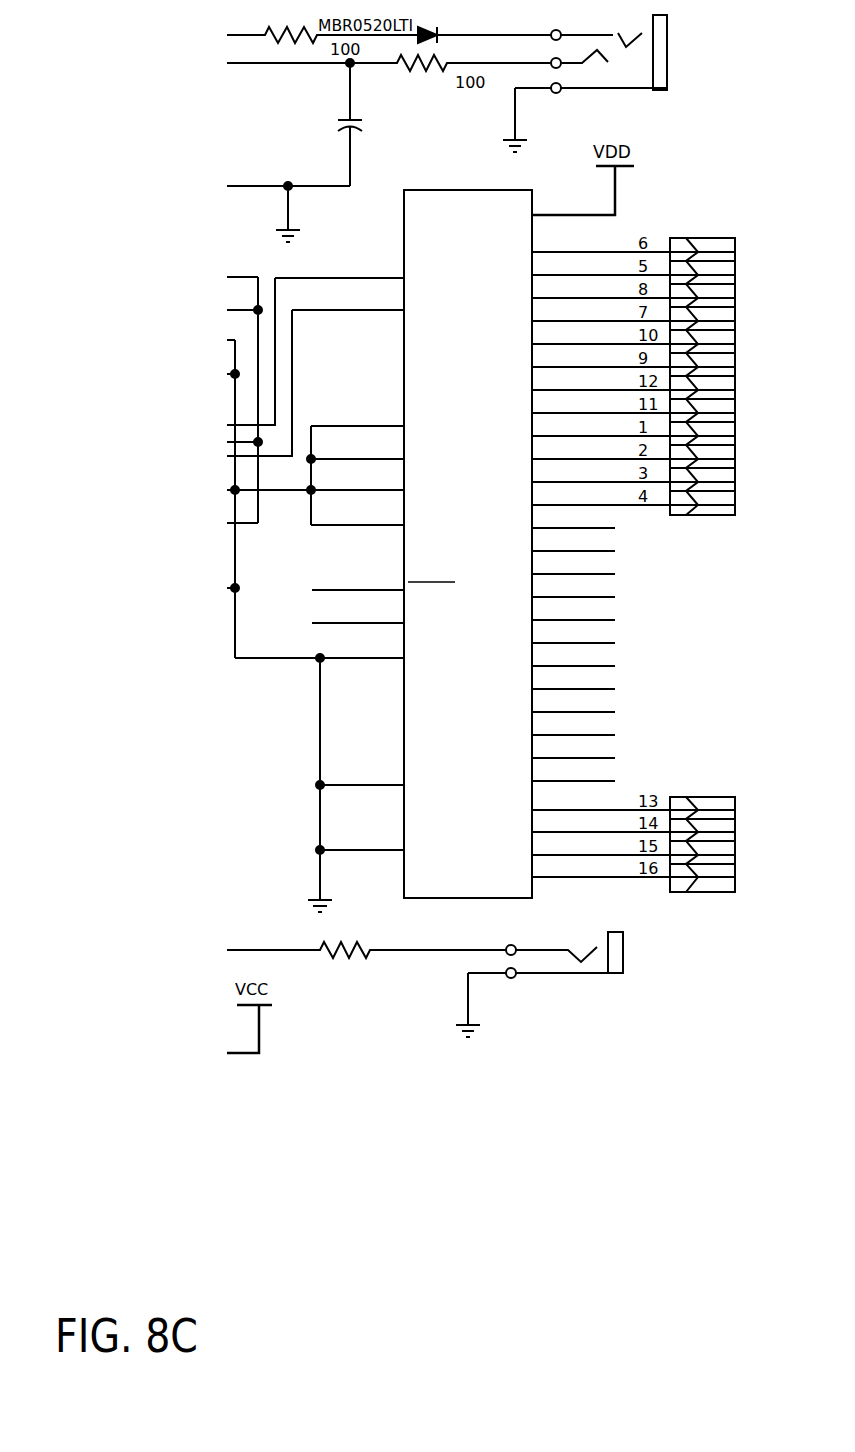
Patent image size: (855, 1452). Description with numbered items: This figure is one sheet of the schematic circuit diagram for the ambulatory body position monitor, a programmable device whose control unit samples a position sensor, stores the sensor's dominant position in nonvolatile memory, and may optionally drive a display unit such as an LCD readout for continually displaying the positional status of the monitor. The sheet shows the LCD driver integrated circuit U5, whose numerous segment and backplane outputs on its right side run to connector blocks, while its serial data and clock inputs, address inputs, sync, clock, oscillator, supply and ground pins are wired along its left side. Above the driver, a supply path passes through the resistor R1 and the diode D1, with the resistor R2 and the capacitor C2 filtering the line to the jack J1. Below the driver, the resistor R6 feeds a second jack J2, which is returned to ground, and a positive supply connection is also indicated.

The resistor R1 (100 ohm) R1 is at (322, 44).
The resistor R2 (100 ohm) R2 is at (389, 73).
The diode D1 MBR0520LTI D1 is at (459, 43).
The capacitor C2 (.01) C2 is at (363, 124).
The connector jack J1 is at (588, 65).
The LCD driver IC U5 PCF8566T U5 is at (464, 544).
The resistor R6 (270K) R6 is at (366, 962).
The connector jack J2 is at (544, 964).